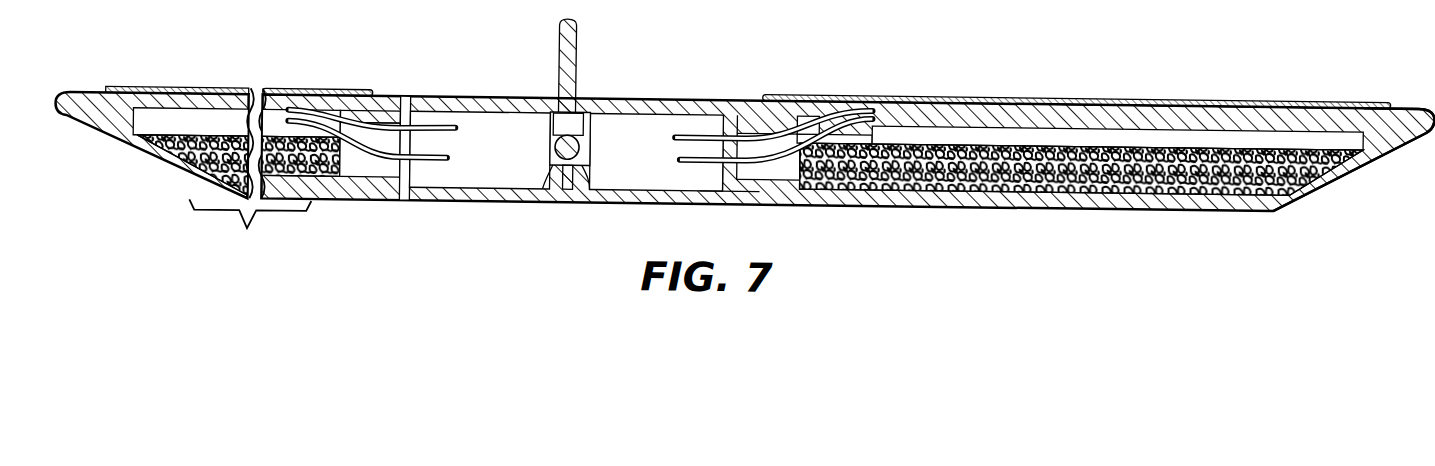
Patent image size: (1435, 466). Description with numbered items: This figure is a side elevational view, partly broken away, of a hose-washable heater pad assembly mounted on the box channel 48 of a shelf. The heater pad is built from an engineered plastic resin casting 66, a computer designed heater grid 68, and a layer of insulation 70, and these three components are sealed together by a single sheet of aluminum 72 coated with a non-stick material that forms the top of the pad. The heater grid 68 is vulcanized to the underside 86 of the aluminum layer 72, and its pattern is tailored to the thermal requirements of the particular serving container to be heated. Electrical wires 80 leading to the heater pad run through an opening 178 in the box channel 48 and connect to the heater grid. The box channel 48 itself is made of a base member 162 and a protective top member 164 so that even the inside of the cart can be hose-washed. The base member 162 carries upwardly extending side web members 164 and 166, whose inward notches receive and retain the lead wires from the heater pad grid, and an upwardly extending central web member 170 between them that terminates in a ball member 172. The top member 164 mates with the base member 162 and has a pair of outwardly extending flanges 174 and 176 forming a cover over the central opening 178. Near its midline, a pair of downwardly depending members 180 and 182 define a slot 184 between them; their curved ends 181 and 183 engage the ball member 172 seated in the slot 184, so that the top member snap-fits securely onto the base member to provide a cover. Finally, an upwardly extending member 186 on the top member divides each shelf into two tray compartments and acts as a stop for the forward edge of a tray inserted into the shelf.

The box channel 48 is at (447, 92).
The engineered plastic resin casting 66 is at (1427, 99).
The heater grid 68 is at (1133, 115).
The layer of insulation 70 is at (1210, 141).
The sheet of aluminum 72 is at (350, 90).
The electrical wires 80 is at (793, 101).
The underside of the aluminum layer 86 is at (1292, 97).
The base member 162 is at (572, 152).
The side web member 164 is at (417, 203).
The side web member 166 is at (707, 203).
The central web member 170 is at (567, 206).
The ball member 172 is at (550, 198).
The outwardly extending flange 174 is at (398, 100).
The outwardly extending flange 176 is at (738, 108).
The opening 178 is at (450, 177).
The downwardly depending member 180 is at (545, 123).
The curved end 181 is at (545, 162).
The downwardly depending member 182 is at (590, 135).
The curved end 183 is at (590, 158).
The slot 184 is at (570, 118).
The upwardly extending member 186 is at (577, 34).